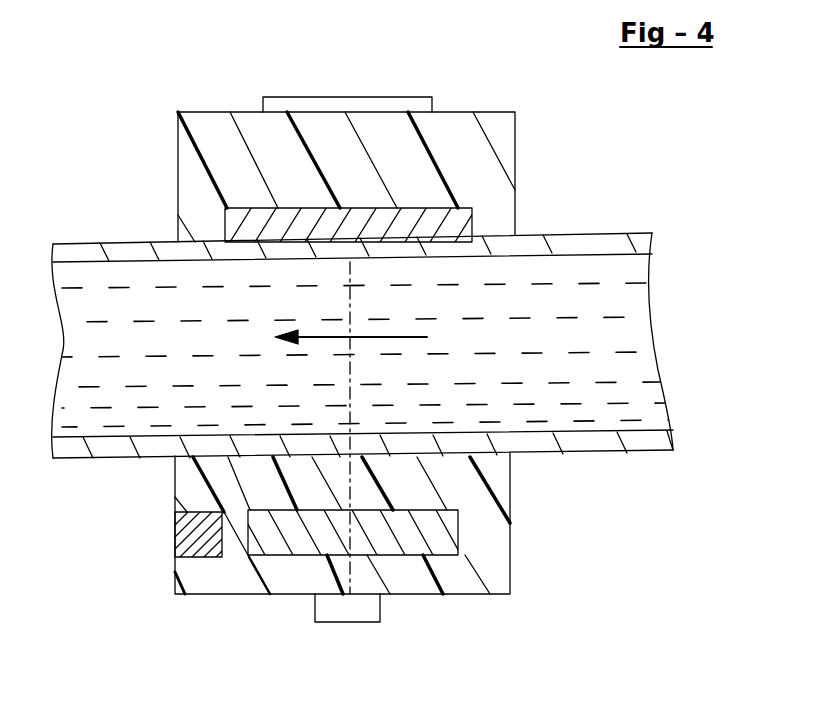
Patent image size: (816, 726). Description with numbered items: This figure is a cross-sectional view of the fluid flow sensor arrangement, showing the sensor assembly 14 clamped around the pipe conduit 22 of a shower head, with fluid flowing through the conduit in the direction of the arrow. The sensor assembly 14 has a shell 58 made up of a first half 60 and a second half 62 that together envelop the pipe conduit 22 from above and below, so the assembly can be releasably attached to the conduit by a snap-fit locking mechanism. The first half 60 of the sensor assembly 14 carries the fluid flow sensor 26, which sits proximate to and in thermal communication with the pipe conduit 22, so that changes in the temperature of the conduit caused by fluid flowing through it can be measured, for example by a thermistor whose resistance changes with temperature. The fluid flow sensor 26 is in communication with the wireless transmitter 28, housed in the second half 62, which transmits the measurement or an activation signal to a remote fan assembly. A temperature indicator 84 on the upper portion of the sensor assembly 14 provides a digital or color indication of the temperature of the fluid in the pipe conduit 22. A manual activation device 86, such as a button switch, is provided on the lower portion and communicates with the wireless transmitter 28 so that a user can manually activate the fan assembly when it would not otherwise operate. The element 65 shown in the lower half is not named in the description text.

The sensor assembly 14 is at (138, 156).
The pipe conduit 22 is at (613, 256).
The fluid flow sensor 26 is at (404, 208).
The wireless transmitter 28 is at (455, 557).
The shell 58 is at (158, 584).
The first half 60 is at (515, 160).
The second half 62 is at (512, 549).
The spacer block 65 is at (190, 540).
The temperature indicator 84 is at (343, 97).
The manual activation device 86 is at (315, 623).